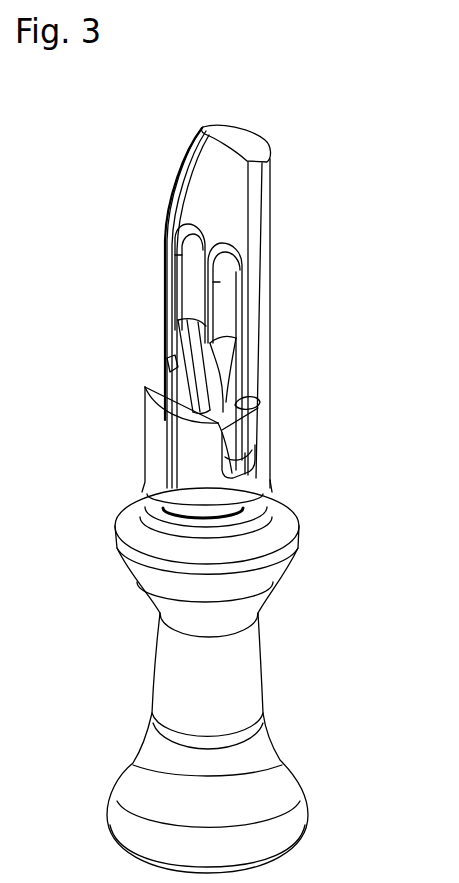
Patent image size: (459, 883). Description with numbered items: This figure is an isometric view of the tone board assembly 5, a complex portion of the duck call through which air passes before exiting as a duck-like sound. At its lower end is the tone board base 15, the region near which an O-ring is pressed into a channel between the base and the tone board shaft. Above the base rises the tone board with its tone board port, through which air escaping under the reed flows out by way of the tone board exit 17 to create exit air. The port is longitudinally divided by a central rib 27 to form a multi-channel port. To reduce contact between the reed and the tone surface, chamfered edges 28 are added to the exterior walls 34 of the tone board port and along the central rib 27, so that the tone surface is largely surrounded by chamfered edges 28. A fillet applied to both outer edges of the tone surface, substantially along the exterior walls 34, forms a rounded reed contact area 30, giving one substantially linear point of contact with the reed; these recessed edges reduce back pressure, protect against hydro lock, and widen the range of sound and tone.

The tone board assembly 5 is at (229, 496).
The tone board base 15 is at (290, 567).
The tone board exit 17 is at (215, 413).
The central rib 27 is at (260, 291).
The chamfered edges 28 is at (267, 181).
The rounded reed contact area 30 is at (260, 337).
The exterior walls 34 is at (196, 289).